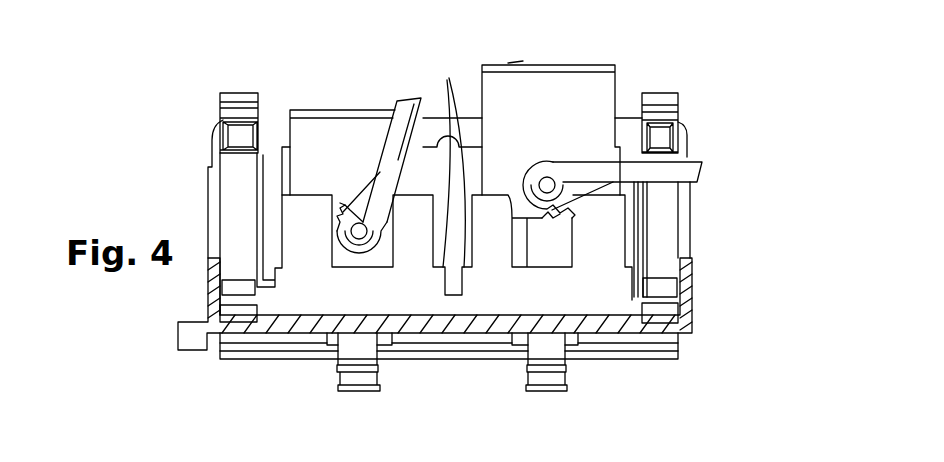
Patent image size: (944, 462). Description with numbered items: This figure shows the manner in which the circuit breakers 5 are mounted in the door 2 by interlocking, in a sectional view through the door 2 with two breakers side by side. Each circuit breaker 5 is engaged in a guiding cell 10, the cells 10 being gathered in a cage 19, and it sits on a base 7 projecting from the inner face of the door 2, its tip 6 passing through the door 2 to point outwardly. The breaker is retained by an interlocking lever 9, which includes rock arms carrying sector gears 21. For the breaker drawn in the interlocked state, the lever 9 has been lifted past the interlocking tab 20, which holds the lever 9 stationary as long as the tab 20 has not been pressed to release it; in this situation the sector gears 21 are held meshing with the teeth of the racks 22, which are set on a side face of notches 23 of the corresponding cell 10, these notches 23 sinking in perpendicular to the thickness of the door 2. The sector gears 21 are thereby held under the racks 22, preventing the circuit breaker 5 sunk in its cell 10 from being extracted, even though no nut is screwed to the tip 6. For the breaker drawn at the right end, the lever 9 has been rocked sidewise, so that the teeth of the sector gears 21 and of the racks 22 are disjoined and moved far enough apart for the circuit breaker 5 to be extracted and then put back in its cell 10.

The door 2 is at (698, 322).
The circuit breaker 5 is at (311, 111).
The tip 6 is at (565, 250).
The base 7 is at (448, 79).
The interlocking lever 9 is at (408, 101).
The guiding cell 10 is at (413, 240).
The cage 19 is at (219, 101).
The interlocking tab 20 is at (393, 109).
The sector gear 21 is at (545, 221).
The rack 22 is at (340, 201).
The notch 23 is at (345, 250).